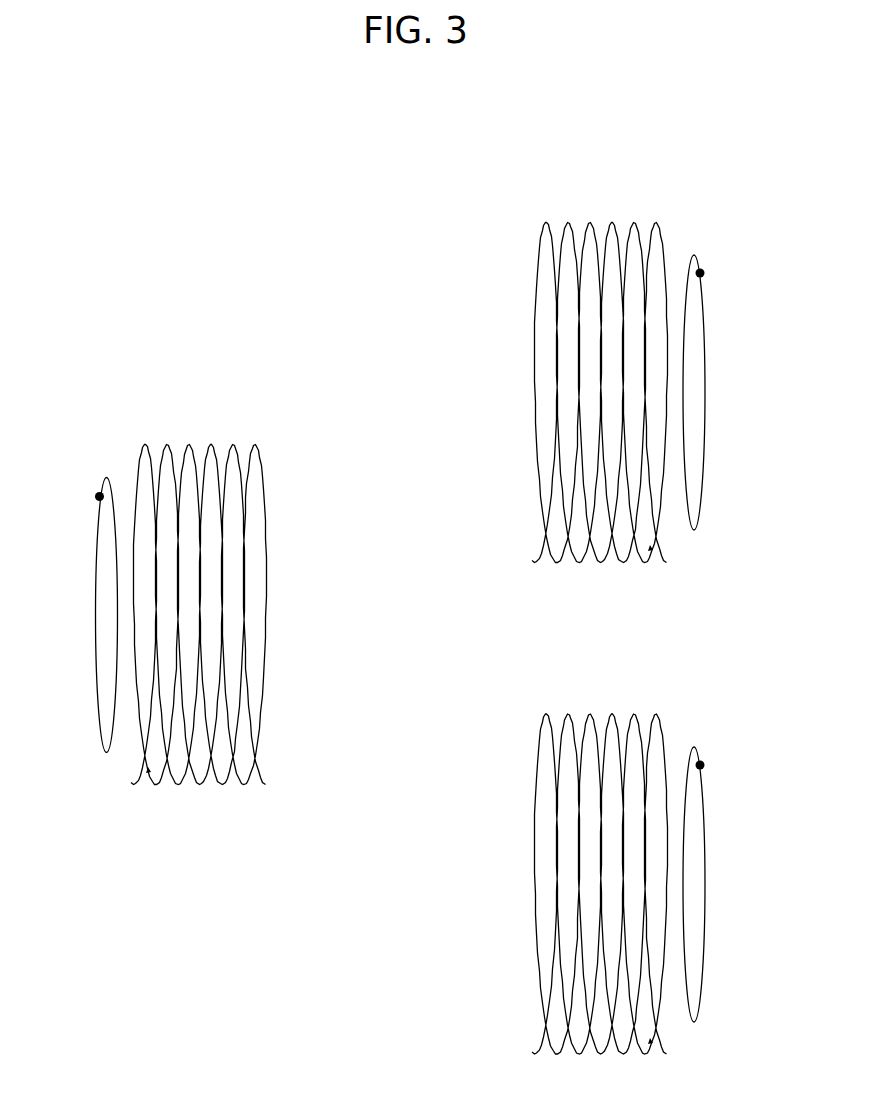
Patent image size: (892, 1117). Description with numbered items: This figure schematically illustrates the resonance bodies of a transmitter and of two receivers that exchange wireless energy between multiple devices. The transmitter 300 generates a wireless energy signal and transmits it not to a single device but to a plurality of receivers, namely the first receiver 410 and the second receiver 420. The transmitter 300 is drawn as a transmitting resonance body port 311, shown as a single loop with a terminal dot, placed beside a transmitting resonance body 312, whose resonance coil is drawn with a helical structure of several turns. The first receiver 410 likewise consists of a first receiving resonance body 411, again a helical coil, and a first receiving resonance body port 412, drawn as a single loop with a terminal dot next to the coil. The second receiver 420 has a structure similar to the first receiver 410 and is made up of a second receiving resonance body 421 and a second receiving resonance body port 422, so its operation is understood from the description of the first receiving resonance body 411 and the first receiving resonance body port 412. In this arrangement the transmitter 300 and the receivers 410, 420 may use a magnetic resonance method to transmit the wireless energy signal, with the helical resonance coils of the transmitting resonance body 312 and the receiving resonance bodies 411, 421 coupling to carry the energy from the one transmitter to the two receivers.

The transmitter 300 is at (209, 553).
The transmitting resonance body port 311 is at (99, 497).
The transmitting resonance body 312 is at (263, 482).
The first receiver 410 is at (637, 336).
The first receiving resonance body 411 is at (561, 250).
The first receiving resonance body port 412 is at (700, 273).
The second receiver 420 is at (684, 819).
The second receiving resonance body 421 is at (582, 718).
The second receiving resonance body port 422 is at (700, 765).